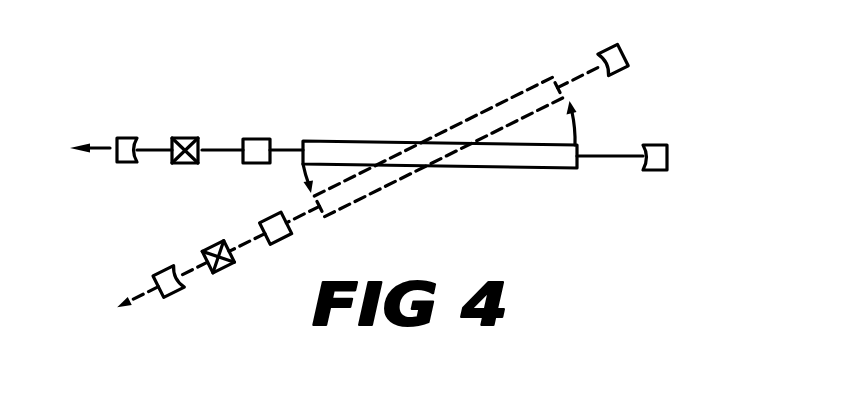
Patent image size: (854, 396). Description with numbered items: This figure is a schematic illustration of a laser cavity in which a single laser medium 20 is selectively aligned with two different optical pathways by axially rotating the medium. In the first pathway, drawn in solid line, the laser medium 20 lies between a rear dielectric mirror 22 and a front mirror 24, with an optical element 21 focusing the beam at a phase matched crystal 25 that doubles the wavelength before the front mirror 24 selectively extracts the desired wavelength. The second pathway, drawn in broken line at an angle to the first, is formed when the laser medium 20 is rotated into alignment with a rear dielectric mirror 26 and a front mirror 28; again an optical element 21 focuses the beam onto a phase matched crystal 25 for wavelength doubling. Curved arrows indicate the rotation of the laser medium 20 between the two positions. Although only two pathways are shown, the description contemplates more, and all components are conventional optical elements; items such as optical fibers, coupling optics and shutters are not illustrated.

The laser medium 20 is at (369, 141).
The optical element 21 is at (256, 139).
The rear dielectric mirror 22 is at (652, 145).
The front mirror 24 is at (130, 138).
The phase matched crystal 25 is at (186, 138).
The rear dielectric mirror 26 is at (604, 48).
The front mirror 28 is at (160, 270).